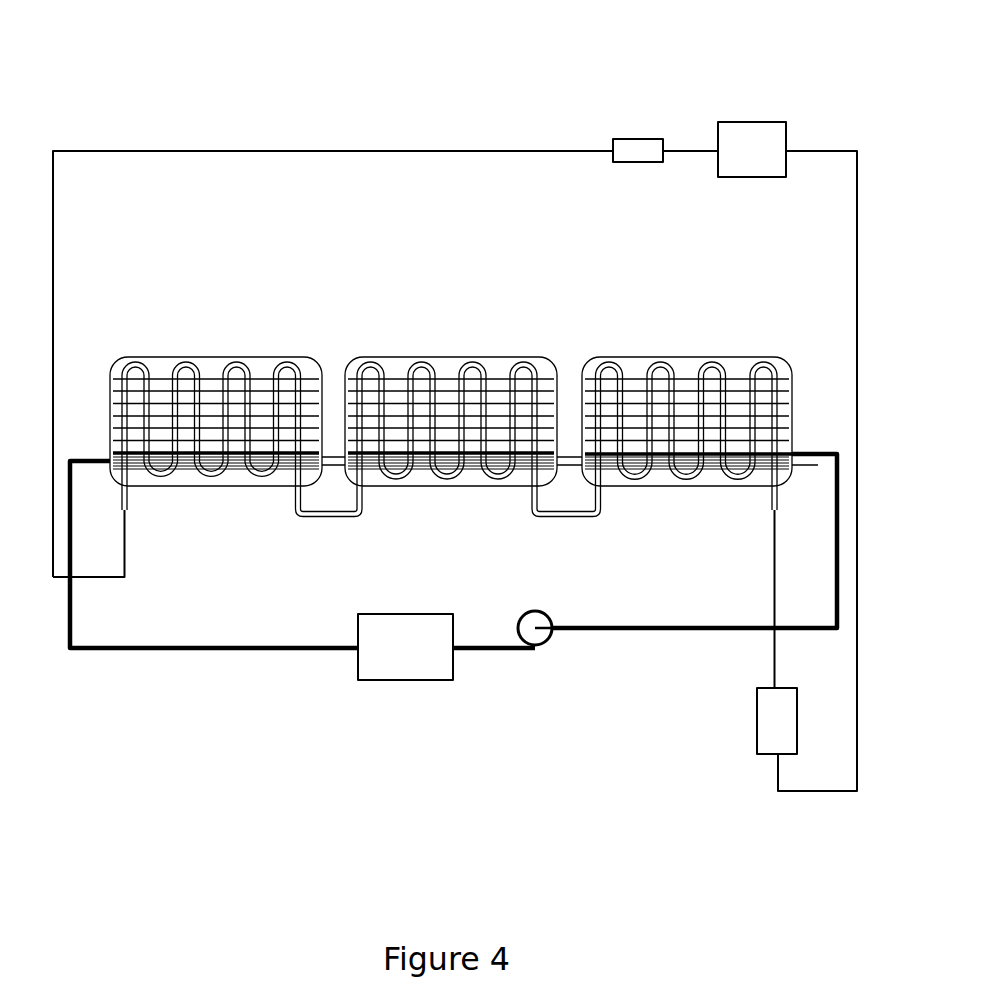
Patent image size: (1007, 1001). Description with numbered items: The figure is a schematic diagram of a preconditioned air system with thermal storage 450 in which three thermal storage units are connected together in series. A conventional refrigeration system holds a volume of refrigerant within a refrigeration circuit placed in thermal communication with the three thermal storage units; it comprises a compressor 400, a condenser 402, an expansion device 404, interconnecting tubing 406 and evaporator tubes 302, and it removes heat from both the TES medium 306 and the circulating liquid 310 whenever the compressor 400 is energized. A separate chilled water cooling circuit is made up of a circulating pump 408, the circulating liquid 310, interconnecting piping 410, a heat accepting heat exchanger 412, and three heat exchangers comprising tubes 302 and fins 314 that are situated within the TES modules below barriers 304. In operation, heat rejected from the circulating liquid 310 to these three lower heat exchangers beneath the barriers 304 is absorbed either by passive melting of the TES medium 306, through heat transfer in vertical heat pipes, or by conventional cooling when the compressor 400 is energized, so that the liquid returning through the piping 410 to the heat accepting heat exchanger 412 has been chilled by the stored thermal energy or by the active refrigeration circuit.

The evaporator tubes 302 is at (167, 383).
The barriers 304 is at (110, 452).
The TES medium 306 is at (402, 383).
The circulating liquid 310 is at (194, 480).
The fins 314 is at (432, 482).
The compressor 400 is at (757, 725).
The condenser 402 is at (750, 122).
The expansion device 404 is at (637, 139).
The interconnecting tubing 406 is at (485, 151).
The circulating pump 408 is at (548, 643).
The interconnecting piping 410 is at (617, 630).
The heat accepting heat exchanger 412 is at (357, 660).
The preconditioned air system with thermal storage 450 is at (333, 820).